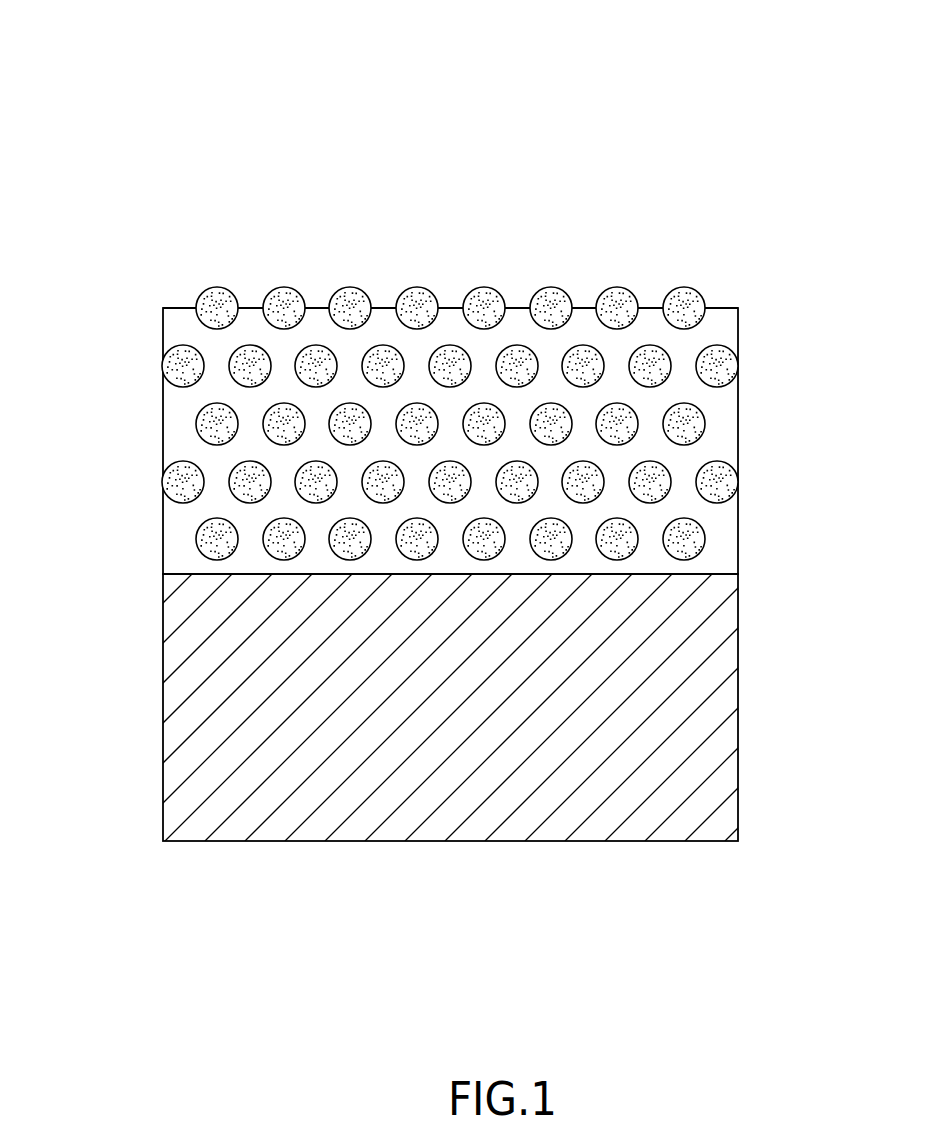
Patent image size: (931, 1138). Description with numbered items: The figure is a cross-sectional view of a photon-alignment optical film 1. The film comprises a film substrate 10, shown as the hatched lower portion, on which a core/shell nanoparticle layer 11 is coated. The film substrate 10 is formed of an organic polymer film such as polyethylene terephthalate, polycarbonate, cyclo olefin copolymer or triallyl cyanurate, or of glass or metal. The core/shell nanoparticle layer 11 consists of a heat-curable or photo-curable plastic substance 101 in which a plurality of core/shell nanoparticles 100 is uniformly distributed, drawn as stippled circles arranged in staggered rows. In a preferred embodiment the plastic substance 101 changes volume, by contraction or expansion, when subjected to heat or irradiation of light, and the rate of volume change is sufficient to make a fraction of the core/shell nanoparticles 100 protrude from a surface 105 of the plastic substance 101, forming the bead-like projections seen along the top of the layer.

The photon-alignment optical film 1 is at (488, 187).
The film substrate 10 is at (348, 855).
The core/shell nanoparticle layer 11 is at (158, 295).
The core/shell nanoparticles 100 is at (222, 288).
The heat-curable or photo-curable plastic substance 101 is at (178, 405).
The surface of the plastic substance 105 is at (725, 307).